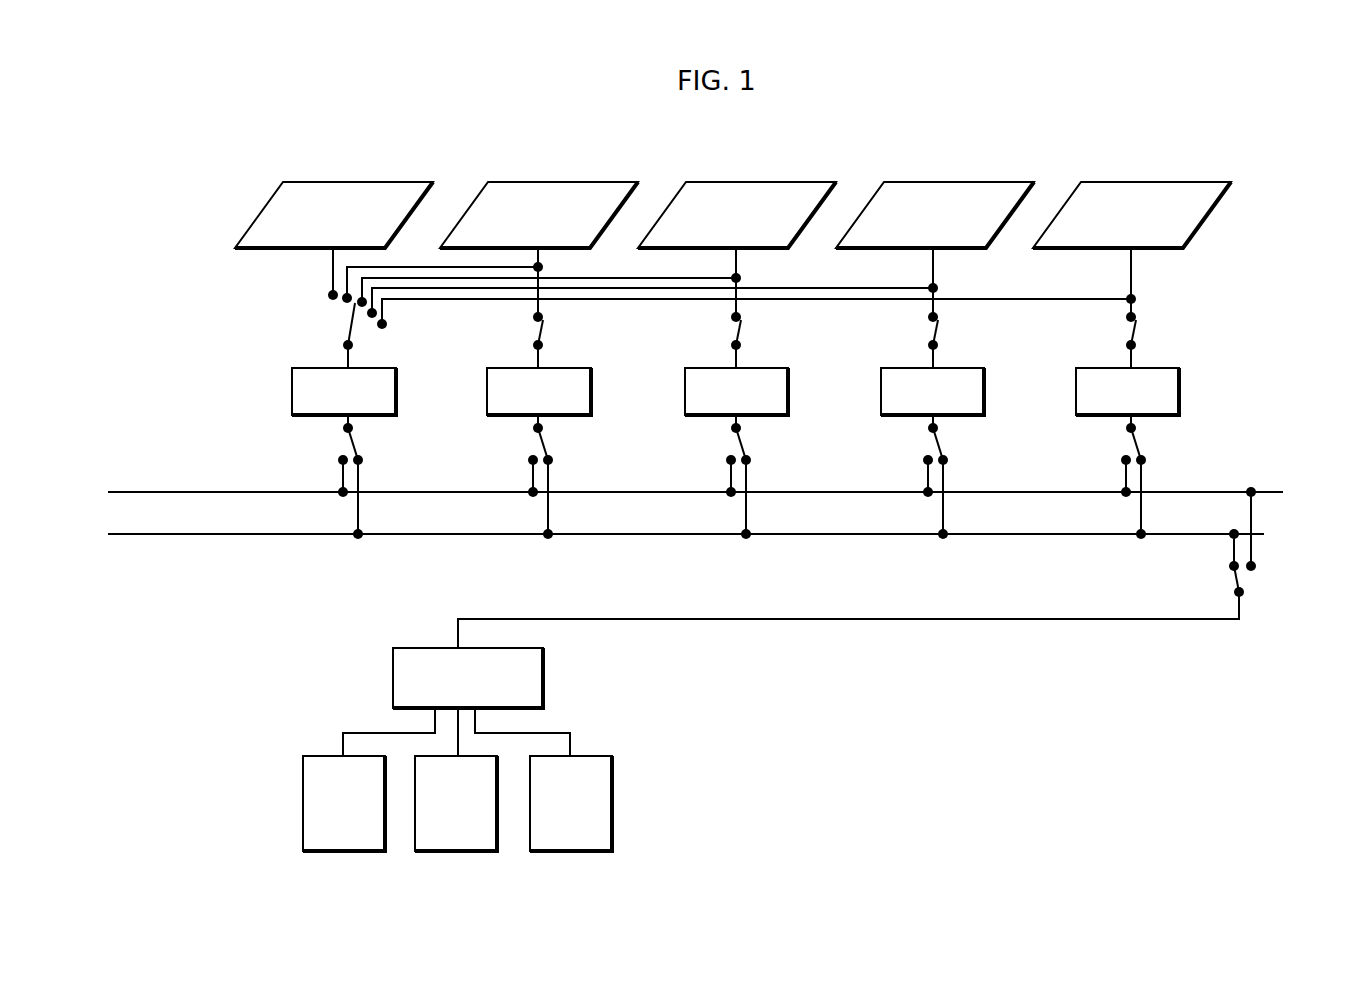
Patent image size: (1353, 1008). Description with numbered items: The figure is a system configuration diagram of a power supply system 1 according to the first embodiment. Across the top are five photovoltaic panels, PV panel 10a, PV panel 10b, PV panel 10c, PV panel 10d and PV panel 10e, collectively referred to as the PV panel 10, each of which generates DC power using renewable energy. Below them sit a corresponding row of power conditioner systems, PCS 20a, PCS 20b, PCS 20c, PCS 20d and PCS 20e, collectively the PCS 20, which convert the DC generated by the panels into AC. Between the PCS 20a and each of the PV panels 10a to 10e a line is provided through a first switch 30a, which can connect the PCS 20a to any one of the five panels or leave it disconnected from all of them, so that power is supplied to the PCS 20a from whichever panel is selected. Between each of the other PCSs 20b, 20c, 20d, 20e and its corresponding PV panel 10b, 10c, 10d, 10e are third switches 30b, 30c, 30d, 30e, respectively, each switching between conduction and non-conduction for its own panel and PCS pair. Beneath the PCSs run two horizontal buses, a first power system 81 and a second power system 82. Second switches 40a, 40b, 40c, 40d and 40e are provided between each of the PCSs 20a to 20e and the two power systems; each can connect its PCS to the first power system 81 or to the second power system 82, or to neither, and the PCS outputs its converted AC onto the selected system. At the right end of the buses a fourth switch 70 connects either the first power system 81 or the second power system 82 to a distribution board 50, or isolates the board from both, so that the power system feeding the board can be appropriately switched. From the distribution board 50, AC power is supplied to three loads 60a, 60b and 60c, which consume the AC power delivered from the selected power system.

The power supply system 1 is at (789, 143).
The PV panel 10 is at (213, 212).
The PV panel 10a is at (425, 194).
The PV panel 10b is at (630, 194).
The PV panel 10c is at (828, 194).
The PV panel 10d is at (1026, 194).
The PV panel 10e is at (1223, 194).
The PCS 20 is at (213, 381).
The PCS 20a is at (396, 378).
The PCS 20b is at (591, 378).
The PCS 20c is at (788, 378).
The PCS 20d is at (984, 378).
The PCS 20e is at (1179, 378).
The first switch 30a is at (352, 324).
The third switch 30b is at (541, 325).
The third switch 30c is at (739, 325).
The third switch 30d is at (936, 325).
The third switch 30e is at (1134, 325).
The second switch 40a is at (354, 446).
The second switch 40b is at (544, 446).
The second switch 40c is at (742, 446).
The second switch 40d is at (939, 446).
The second switch 40e is at (1137, 446).
The distribution board 50 is at (543, 678).
The load 60a is at (365, 852).
The load 60b is at (465, 852).
The load 60c is at (585, 852).
The fourth switch 70 is at (1238, 578).
The first power system 81 is at (227, 491).
The second power system 82 is at (227, 535).